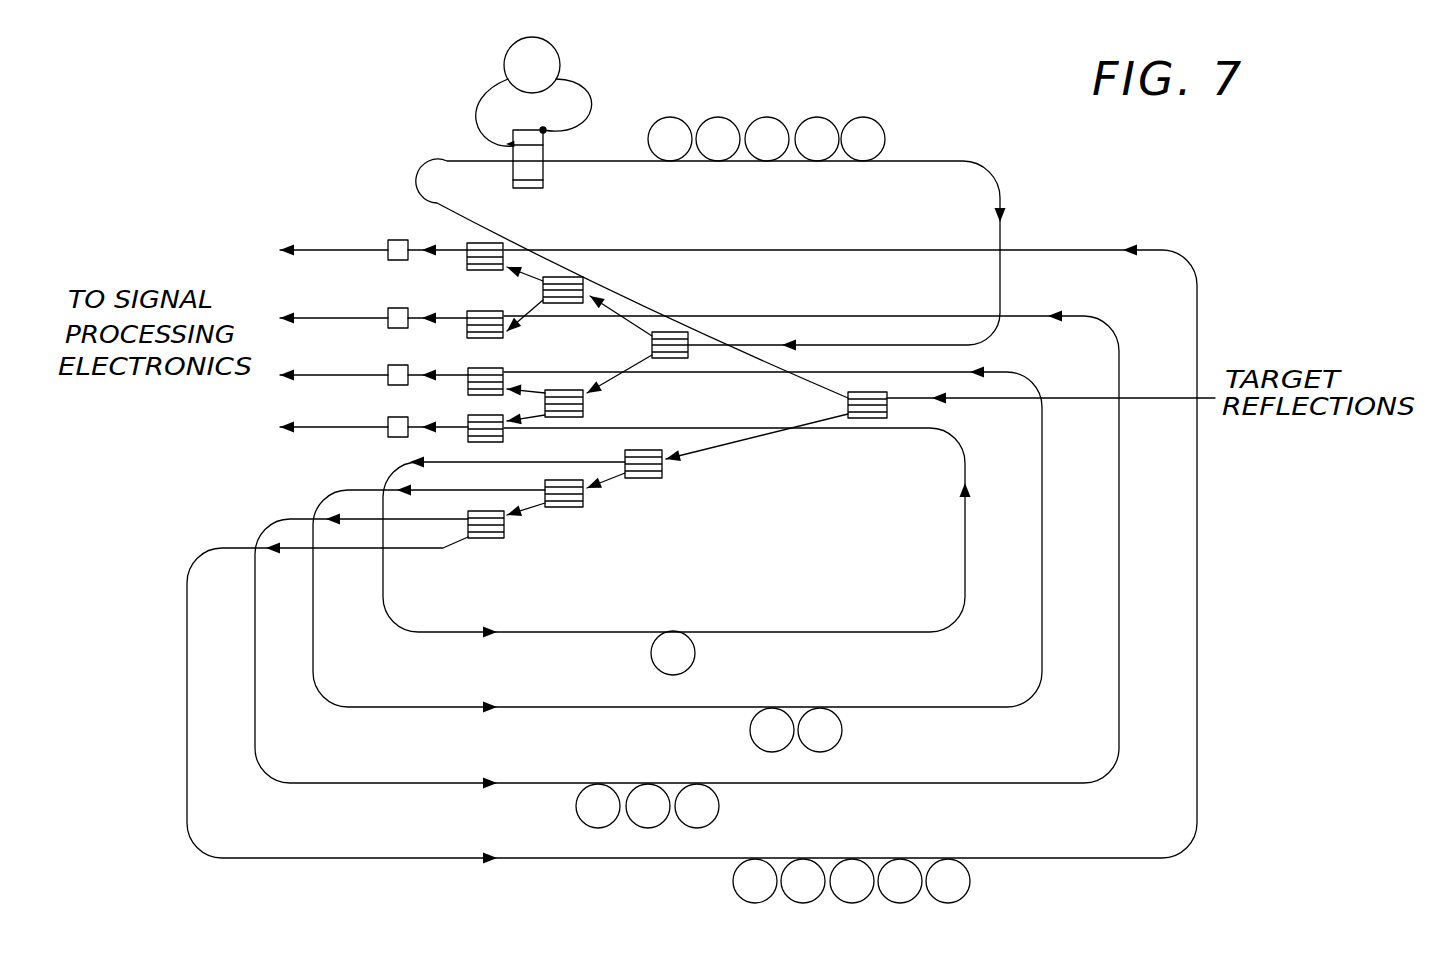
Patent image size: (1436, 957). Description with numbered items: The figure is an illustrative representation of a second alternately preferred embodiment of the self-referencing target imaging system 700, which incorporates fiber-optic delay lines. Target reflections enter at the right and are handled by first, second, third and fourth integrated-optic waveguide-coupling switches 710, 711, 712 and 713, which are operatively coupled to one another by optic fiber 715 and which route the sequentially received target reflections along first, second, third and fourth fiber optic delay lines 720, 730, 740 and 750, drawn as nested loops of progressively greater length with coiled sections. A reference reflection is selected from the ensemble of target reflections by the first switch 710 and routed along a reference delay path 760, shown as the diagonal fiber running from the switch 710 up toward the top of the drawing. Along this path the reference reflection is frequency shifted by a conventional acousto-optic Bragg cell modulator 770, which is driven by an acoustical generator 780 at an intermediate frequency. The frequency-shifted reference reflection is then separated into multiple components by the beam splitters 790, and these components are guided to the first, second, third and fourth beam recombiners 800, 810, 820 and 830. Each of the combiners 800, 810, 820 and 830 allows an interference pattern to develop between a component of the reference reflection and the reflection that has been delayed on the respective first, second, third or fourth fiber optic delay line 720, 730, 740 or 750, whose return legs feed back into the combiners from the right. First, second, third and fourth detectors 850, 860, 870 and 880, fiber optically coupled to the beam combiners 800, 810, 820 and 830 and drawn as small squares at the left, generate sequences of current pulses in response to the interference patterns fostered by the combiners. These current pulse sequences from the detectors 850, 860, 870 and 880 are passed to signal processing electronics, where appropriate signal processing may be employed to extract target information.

The self-referencing target imaging system 700 is at (907, 113).
The first integrated-optic waveguide-coupling switch 710 is at (893, 420).
The second integrated-optic waveguide-coupling switch 711 is at (663, 472).
The third integrated-optic waveguide-coupling switch 712 is at (585, 506).
The fourth integrated-optic waveguide-coupling switch 713 is at (493, 540).
The optic fiber 715 is at (733, 443).
The first fiber optic delay line 720 is at (515, 630).
The second fiber optic delay line 730 is at (445, 706).
The third fiber optic delay line 740 is at (398, 782).
The fourth fiber optic delay line 750 is at (412, 857).
The reference delay path 760 is at (507, 232).
The acousto-optic Bragg cell modulator 770 is at (545, 153).
The acoustical generator 780 is at (505, 58).
The beam splitter 790 is at (567, 304).
The first beam recombiner 800 is at (495, 443).
The second beam recombiner 810 is at (497, 367).
The third beam recombiner 820 is at (487, 339).
The fourth beam recombiner 830 is at (482, 271).
The first detector 850 is at (388, 438).
The second detector 860 is at (388, 387).
The third detector 870 is at (388, 330).
The fourth detector 880 is at (390, 262).